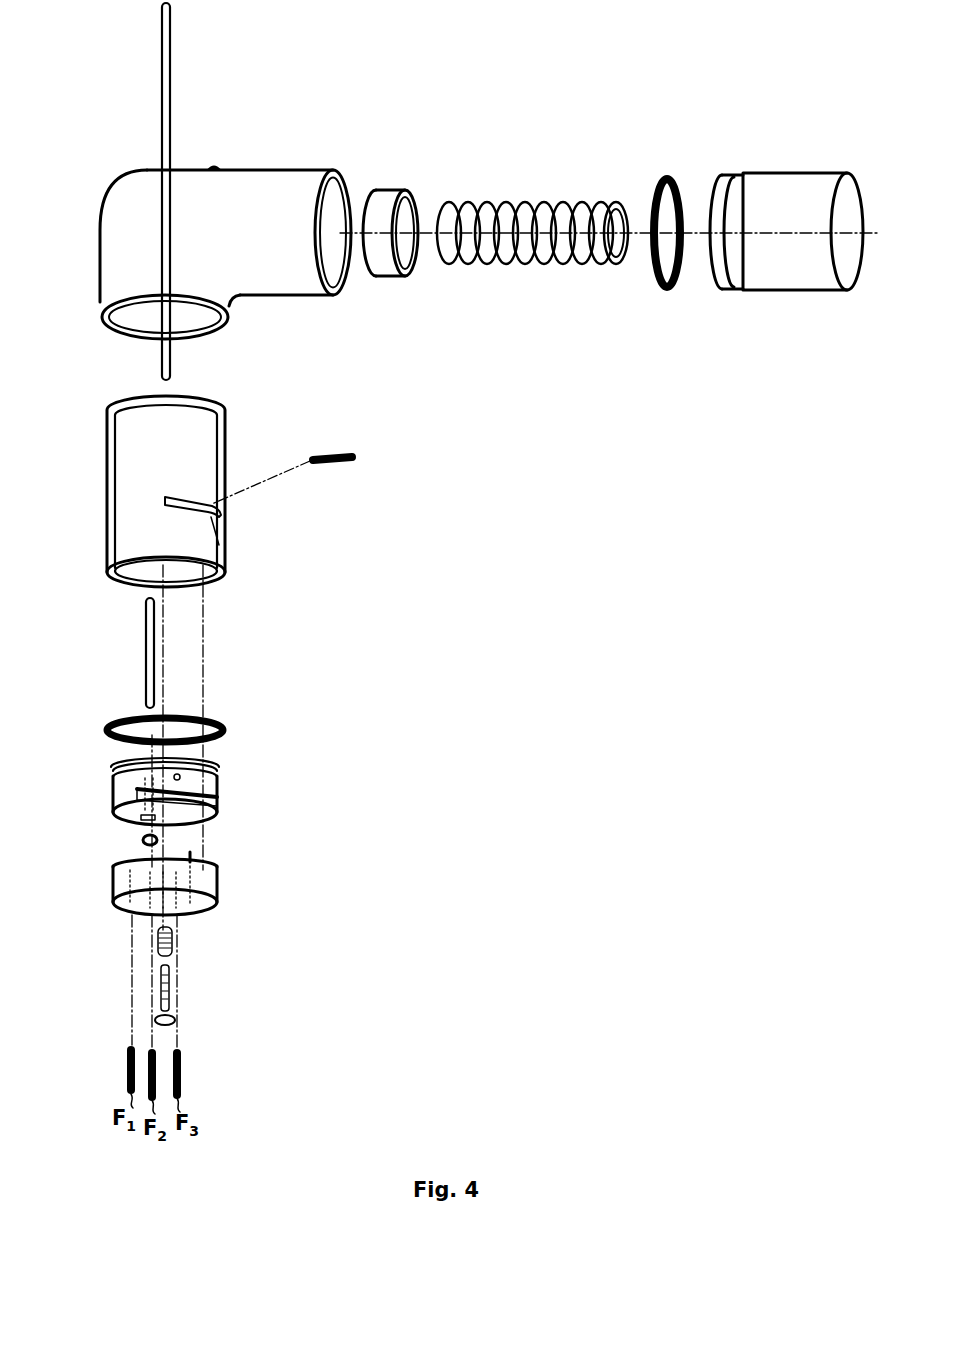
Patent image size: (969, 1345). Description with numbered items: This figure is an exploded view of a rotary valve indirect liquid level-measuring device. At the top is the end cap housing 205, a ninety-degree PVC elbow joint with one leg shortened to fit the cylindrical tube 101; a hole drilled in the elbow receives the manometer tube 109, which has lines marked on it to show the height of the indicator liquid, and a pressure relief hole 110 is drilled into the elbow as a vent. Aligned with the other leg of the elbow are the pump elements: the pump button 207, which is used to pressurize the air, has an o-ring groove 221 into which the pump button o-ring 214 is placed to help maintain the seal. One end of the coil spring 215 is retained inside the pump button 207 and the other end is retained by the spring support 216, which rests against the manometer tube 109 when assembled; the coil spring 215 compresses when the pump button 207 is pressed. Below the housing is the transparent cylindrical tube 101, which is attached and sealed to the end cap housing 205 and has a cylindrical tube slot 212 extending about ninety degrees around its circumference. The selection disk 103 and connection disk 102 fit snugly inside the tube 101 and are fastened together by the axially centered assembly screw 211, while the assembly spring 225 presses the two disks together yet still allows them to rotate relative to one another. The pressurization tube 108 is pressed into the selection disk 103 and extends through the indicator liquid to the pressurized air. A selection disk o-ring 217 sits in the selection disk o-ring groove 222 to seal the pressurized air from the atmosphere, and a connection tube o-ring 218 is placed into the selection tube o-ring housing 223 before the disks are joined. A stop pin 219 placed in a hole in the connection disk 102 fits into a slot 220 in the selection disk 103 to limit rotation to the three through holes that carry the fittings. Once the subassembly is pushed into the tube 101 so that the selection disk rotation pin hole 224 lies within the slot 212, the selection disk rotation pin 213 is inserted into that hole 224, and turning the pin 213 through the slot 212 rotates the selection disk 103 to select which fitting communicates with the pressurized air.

The manometer tube 109 is at (161, 60).
The pressure relief hole 110 is at (211, 167).
The end cap housing 205 is at (255, 168).
The spring support 216 is at (392, 188).
The coil spring 215 is at (528, 200).
The pump button o-ring 214 is at (661, 172).
The o-ring groove 221 is at (741, 174).
The pump button 207 is at (807, 172).
The cylindrical tube 101 is at (228, 428).
The selection disk rotation pin 213 is at (332, 464).
The cylindrical tube slot 212 is at (228, 548).
The pressurization tube 108 is at (145, 612).
The selection disk o-ring 217 is at (218, 726).
The selection disk rotation pin hole 224 is at (181, 777).
The selection disk o-ring groove 222 is at (113, 773).
The slot 220 is at (195, 798).
The selection disk 103 is at (113, 795).
The selection tube o-ring housing 223 is at (143, 818).
The stop pin 219 is at (193, 856).
The connection tube o-ring 218 is at (143, 842).
The connection disk 102 is at (118, 906).
The assembly spring 225 is at (176, 942).
The assembly screw 211 is at (178, 1020).